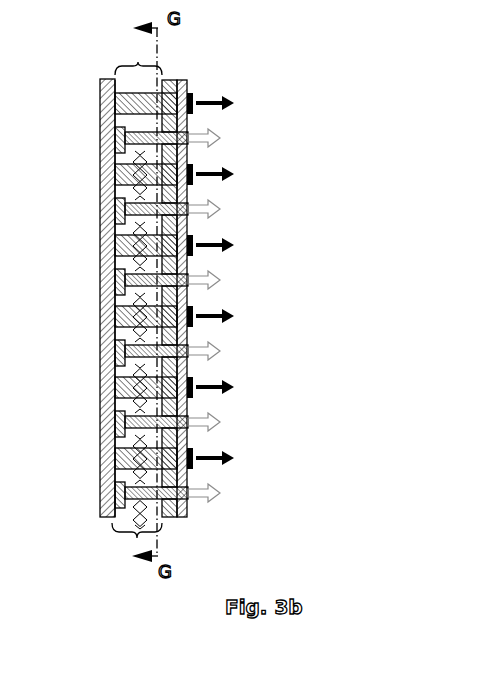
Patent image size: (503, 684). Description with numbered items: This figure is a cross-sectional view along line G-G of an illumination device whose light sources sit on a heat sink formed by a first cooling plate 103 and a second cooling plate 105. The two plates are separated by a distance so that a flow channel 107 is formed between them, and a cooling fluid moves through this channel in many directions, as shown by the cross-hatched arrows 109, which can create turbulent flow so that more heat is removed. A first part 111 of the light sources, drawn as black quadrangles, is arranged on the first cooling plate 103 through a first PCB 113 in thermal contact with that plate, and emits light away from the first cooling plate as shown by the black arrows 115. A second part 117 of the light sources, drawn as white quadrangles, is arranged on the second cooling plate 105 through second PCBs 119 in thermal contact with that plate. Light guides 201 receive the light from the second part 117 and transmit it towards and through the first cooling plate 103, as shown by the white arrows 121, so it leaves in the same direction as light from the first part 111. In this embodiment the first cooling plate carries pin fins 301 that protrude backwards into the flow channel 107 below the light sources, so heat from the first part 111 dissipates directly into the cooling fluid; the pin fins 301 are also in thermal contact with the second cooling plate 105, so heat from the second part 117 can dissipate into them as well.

The pin fins 301 is at (100, 88).
The flow channel 107 is at (128, 302).
The first cooling plate 103 is at (168, 152).
The second part of the light sources 117 is at (116, 184).
The black arrows 115 is at (192, 172).
The second PCBs 119 is at (120, 212).
The first part of the light sources 111 is at (186, 180).
The first PCB 113 is at (182, 196).
The second cooling plate 105 is at (112, 233).
The light guides 201 is at (175, 216).
The cross-hatched arrows 109 is at (130, 253).
The white arrows 121 is at (213, 350).